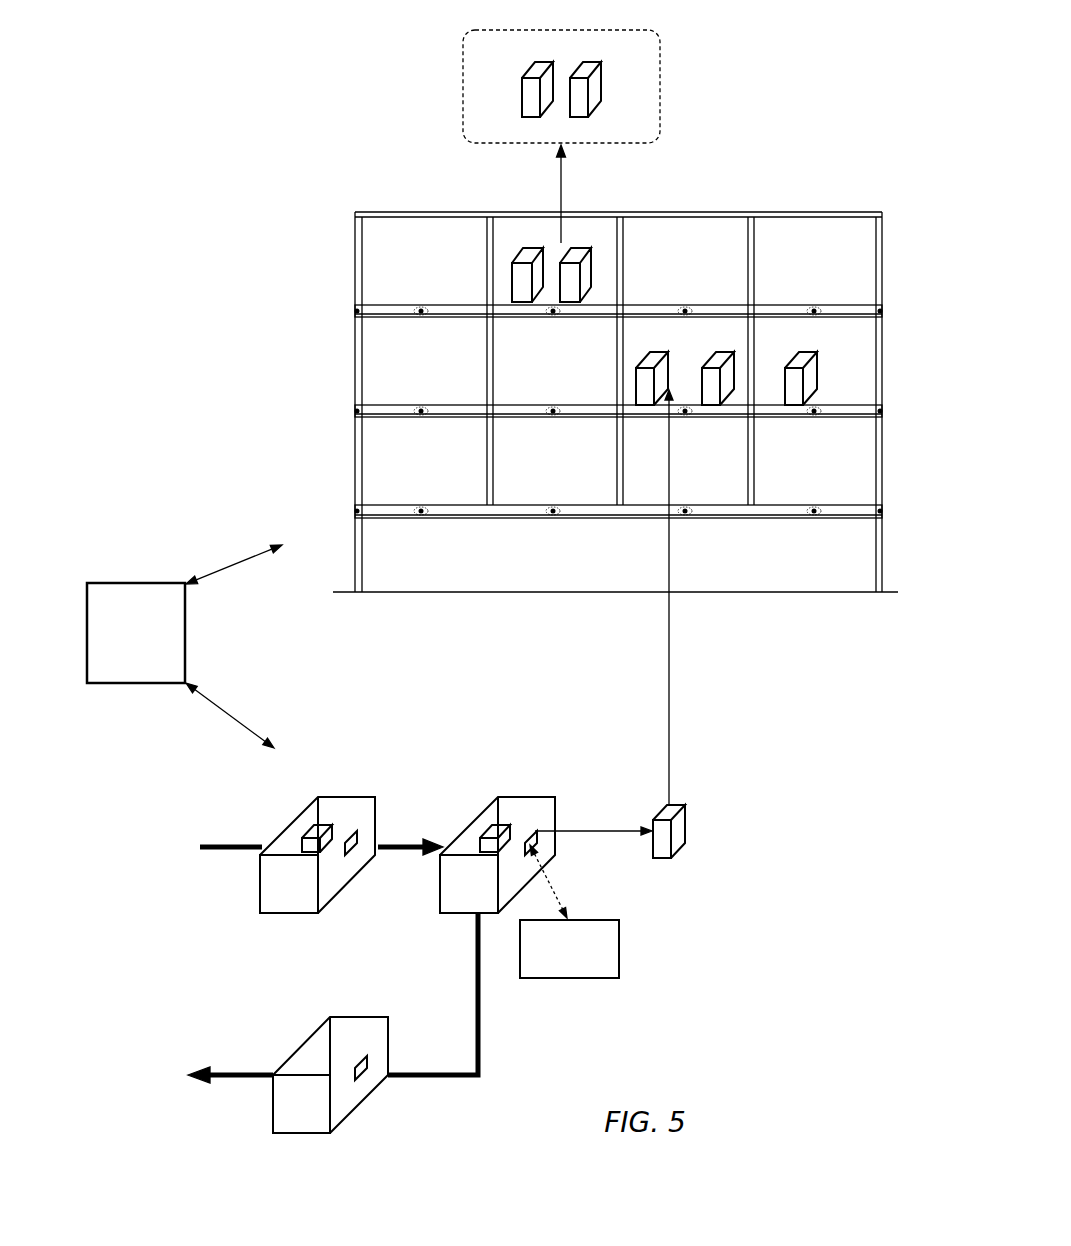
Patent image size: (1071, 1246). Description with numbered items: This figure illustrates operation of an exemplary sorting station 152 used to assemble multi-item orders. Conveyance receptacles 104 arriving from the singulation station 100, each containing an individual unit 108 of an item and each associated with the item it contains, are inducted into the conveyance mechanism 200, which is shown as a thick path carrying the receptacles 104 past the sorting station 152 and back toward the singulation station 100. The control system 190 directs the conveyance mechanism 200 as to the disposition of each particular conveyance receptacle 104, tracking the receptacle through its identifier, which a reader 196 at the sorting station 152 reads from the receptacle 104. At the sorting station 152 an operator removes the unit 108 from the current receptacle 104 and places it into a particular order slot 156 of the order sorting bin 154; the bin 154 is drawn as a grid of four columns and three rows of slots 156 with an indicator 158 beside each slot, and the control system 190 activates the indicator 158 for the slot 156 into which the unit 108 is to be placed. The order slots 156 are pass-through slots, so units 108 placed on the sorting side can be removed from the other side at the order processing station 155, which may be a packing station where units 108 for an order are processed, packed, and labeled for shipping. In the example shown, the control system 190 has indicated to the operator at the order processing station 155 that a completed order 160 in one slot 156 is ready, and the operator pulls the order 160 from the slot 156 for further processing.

The singulation station 100 is at (103, 961).
The conveyance receptacle 104 is at (471, 787).
The unit 108 is at (699, 862).
The sorting station 152 is at (758, 614).
The order sorting bin 154 is at (506, 451).
The order processing station 155 is at (643, 131).
The order slot 156 is at (713, 467).
The indicator 158 is at (396, 317).
The completed order 160 is at (561, 86).
The control system 190 is at (184, 646).
The reader 196 is at (569, 911).
The conveyance mechanism 200 is at (329, 961).